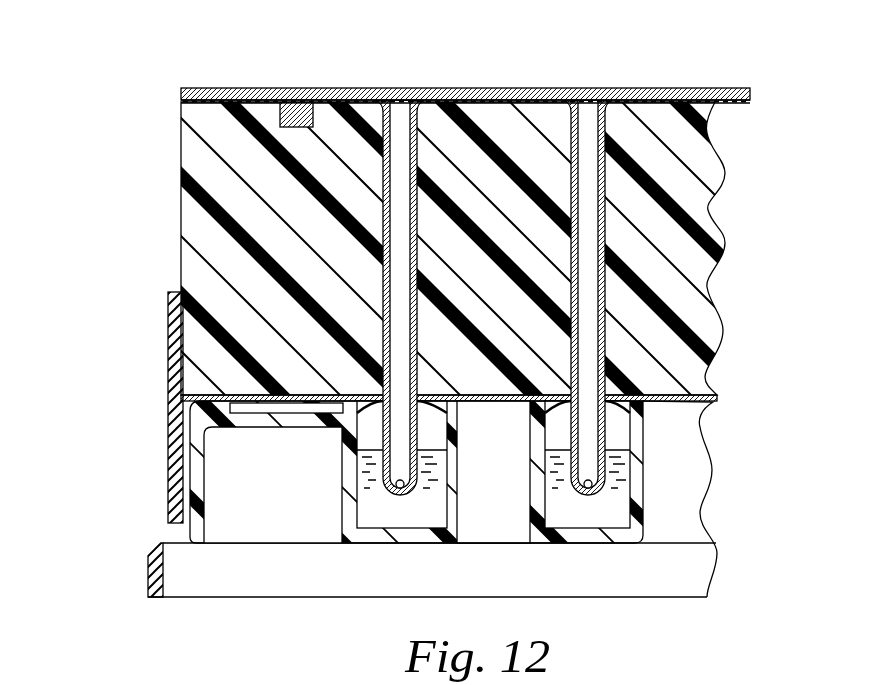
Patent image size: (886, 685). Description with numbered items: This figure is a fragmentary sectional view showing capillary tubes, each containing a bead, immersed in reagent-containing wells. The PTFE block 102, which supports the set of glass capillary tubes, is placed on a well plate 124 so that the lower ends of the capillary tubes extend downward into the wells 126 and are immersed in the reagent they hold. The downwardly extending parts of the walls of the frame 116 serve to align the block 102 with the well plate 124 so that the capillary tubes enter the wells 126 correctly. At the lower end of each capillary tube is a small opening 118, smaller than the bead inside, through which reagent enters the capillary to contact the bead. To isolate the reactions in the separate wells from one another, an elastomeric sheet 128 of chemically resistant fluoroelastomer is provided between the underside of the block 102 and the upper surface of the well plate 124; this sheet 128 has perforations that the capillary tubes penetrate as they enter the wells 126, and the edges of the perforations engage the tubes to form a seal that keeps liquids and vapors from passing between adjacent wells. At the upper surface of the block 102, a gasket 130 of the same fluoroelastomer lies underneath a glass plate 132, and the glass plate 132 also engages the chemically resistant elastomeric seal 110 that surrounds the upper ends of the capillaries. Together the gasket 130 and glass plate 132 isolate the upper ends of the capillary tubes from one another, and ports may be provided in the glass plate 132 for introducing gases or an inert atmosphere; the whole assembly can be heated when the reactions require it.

The block 102 is at (193, 151).
The elastomeric seal 110 is at (306, 103).
The frame 116 is at (172, 367).
The openings 118 is at (583, 493).
The well plate 124 is at (142, 553).
The wells 126 is at (370, 505).
The elastomeric sheet 128 is at (670, 403).
The gasket 130 is at (492, 102).
The glass plate 132 is at (593, 102).